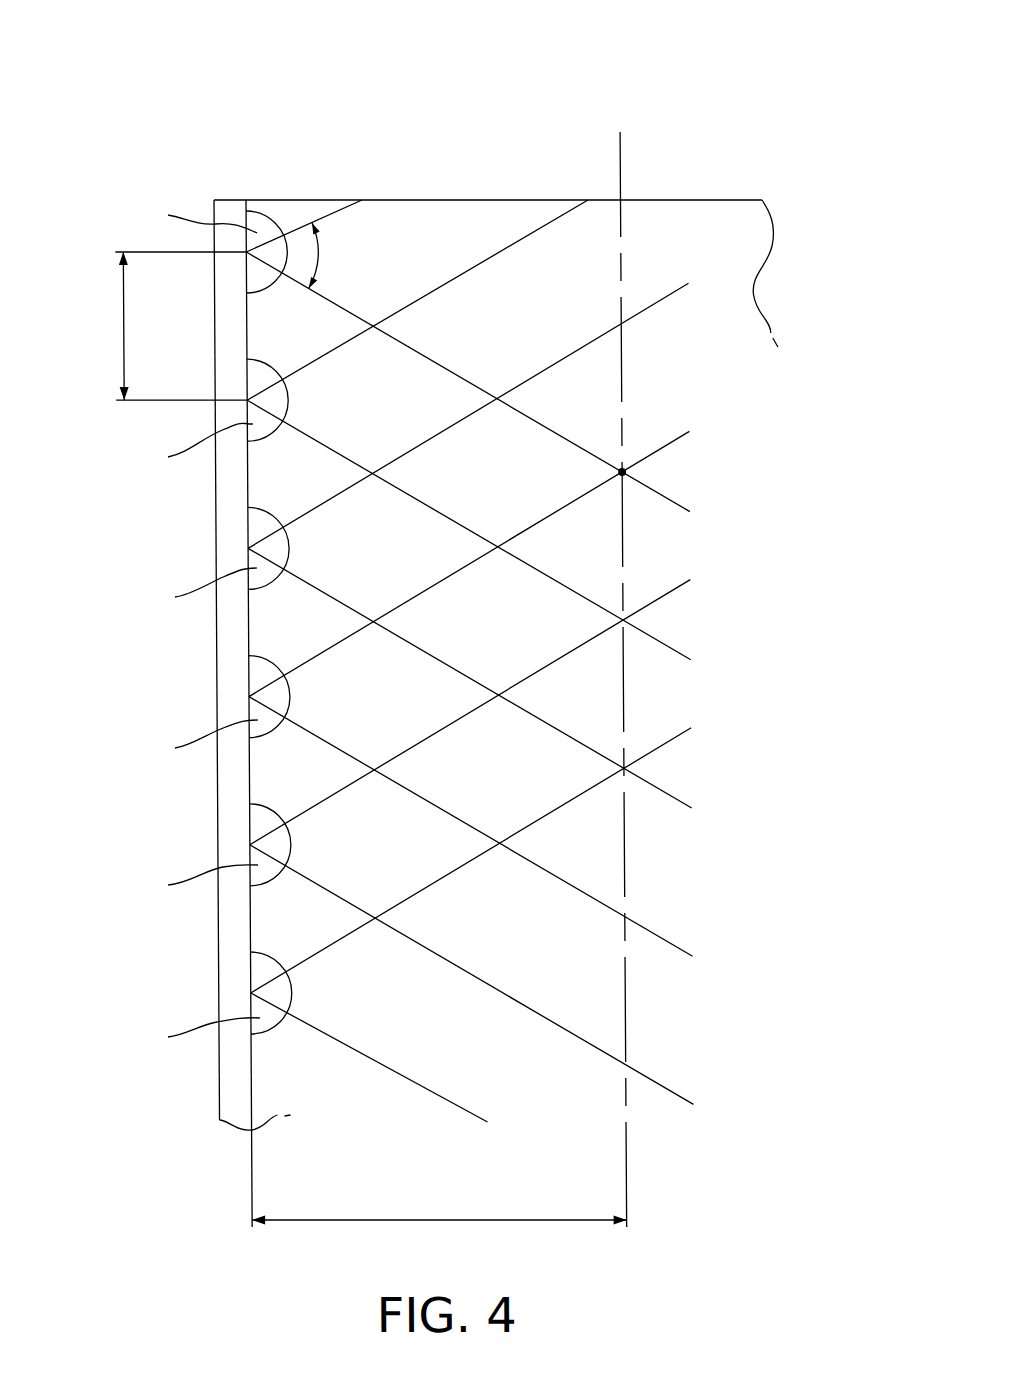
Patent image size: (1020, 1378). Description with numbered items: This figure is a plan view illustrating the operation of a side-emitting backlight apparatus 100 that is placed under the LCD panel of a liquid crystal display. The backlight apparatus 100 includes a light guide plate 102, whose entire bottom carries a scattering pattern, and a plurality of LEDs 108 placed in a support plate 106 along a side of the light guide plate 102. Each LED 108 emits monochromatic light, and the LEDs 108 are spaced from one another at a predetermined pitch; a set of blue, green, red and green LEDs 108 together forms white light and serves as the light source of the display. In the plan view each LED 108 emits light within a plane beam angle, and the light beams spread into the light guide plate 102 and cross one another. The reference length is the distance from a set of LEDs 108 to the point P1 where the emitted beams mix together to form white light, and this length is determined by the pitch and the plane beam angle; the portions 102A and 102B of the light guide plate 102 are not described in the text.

The side-emitting backlight apparatus 100 is at (244, 28).
The light guide plate 102 is at (508, 172).
The light incident surface of light guide plate 102A is at (417, 245).
The light exit portion of light guide plate 102B is at (685, 247).
The support plate 106 is at (218, 1093).
The LED 108 is at (202, 200).
The mixing point of light P1 is at (627, 469).